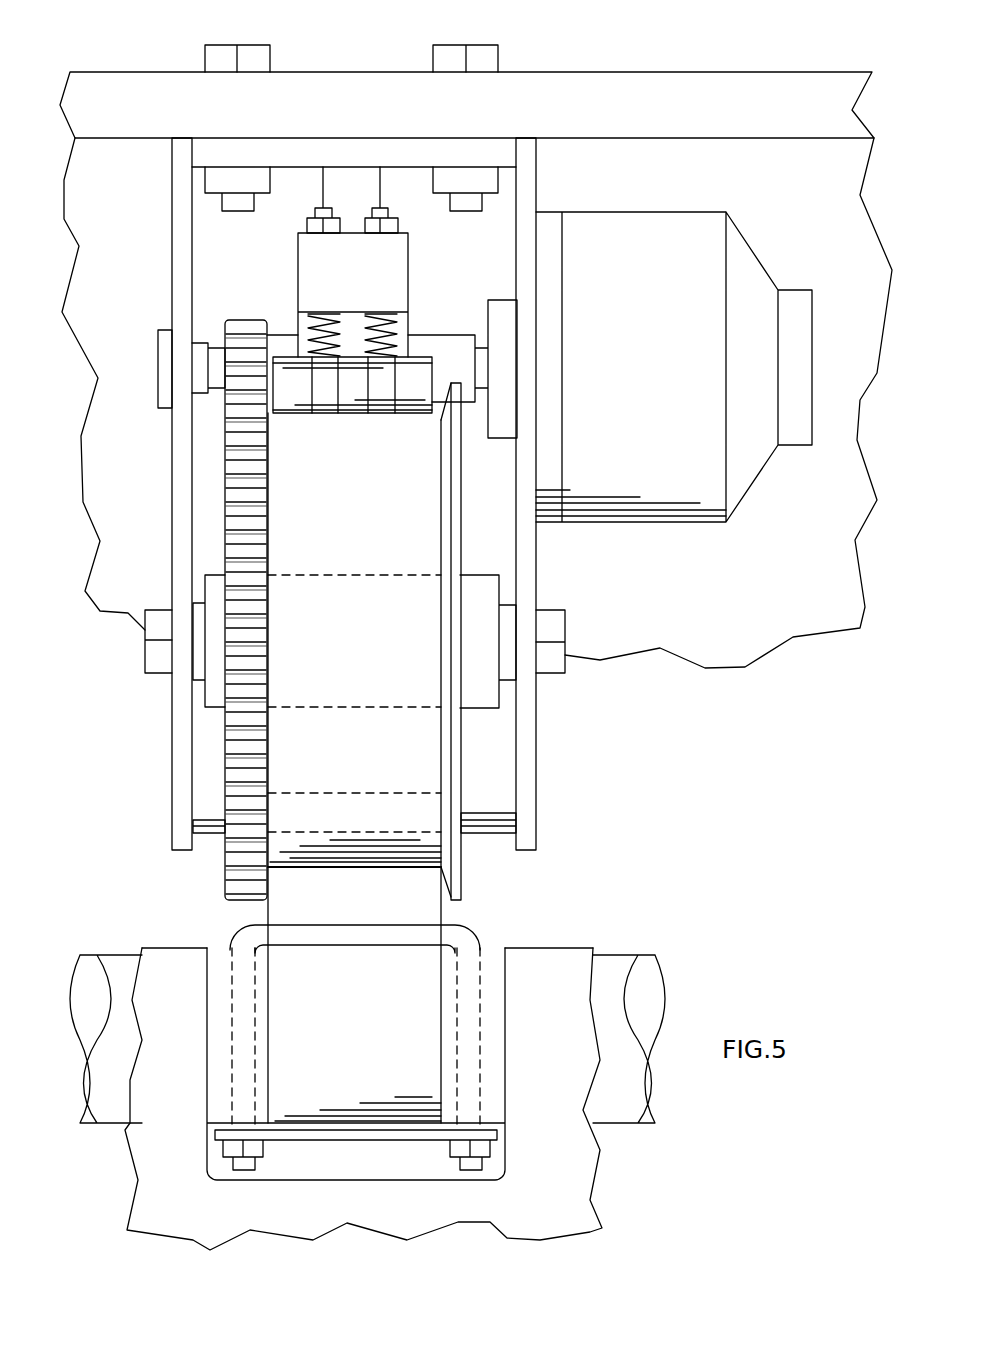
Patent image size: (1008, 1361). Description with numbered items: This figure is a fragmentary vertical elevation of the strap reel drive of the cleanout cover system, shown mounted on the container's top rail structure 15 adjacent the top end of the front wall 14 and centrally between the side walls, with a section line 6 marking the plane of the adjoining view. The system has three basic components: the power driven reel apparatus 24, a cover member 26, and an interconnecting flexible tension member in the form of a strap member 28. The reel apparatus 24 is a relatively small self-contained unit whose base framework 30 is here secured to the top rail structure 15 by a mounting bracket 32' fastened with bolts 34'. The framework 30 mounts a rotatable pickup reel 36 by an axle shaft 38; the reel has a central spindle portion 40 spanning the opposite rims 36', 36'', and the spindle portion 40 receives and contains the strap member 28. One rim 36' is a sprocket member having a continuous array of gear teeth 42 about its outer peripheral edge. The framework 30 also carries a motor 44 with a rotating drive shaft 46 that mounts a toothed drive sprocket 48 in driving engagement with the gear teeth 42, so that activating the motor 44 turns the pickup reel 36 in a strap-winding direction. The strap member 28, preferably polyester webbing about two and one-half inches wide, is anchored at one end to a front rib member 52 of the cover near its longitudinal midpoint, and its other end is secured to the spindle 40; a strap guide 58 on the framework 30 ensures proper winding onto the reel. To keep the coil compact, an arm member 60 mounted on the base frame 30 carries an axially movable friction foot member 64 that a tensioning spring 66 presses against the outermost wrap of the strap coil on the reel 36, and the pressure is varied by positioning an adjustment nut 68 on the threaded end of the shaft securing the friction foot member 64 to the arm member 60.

The section line 6- 6 is at (395, 6).
The front wall 14 is at (813, 218).
The top rail structure 15 is at (700, 72).
The power driven reel apparatus 24 is at (585, 727).
The cover member 26 is at (550, 955).
The strap member 28 is at (371, 683).
The base framework 30 is at (172, 224).
The mounting bracket 32' is at (354, 128).
The bolts 34' is at (368, 105).
The pickup reel 36 is at (166, 884).
The rim 36' is at (265, 675).
The rim 36'' is at (414, 641).
The axle shaft 38 is at (145, 662).
The spindle portion 40 is at (490, 574).
The gear teeth 42 is at (258, 619).
The motor 44 is at (630, 523).
The drive shaft 46 is at (275, 334).
The drive sprocket 48 is at (237, 319).
The front rib member 52 is at (632, 950).
The strap guide 58 is at (493, 850).
The arm member 60 is at (408, 258).
The friction foot member 64 is at (350, 414).
The tensioning spring 66 is at (352, 337).
The adjustment nut 68 is at (307, 224).